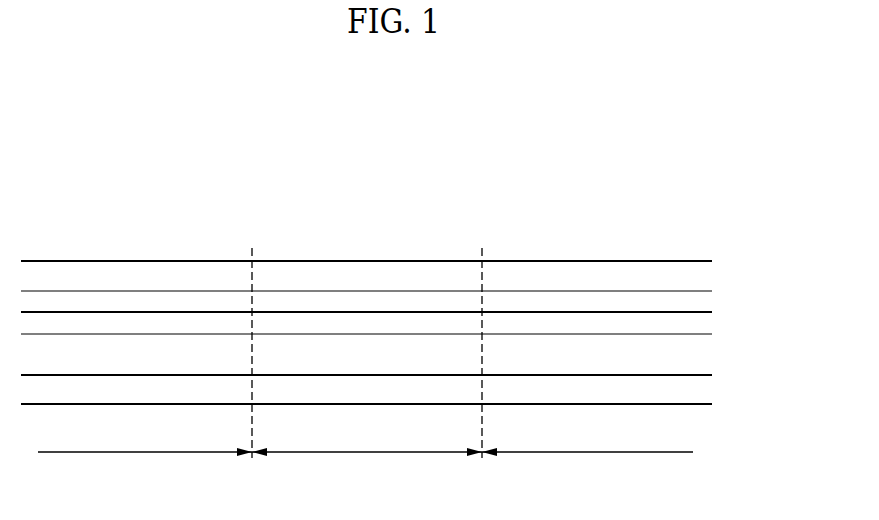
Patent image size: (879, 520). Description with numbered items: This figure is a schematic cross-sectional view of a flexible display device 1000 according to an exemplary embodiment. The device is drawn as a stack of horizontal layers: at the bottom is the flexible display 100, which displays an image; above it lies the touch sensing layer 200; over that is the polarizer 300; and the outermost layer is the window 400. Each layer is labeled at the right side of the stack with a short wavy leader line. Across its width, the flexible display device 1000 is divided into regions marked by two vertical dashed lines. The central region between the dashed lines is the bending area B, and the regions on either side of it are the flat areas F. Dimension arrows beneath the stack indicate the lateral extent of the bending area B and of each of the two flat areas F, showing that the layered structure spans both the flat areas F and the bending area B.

The flexible display device 1000 is at (422, 191).
The window 400 is at (705, 276).
The polarizer 300 is at (705, 302).
The touch sensing layer 200 is at (705, 327).
The flexible display 100 is at (705, 357).
The bending area B is at (367, 466).
The flat areas F is at (365, 467).